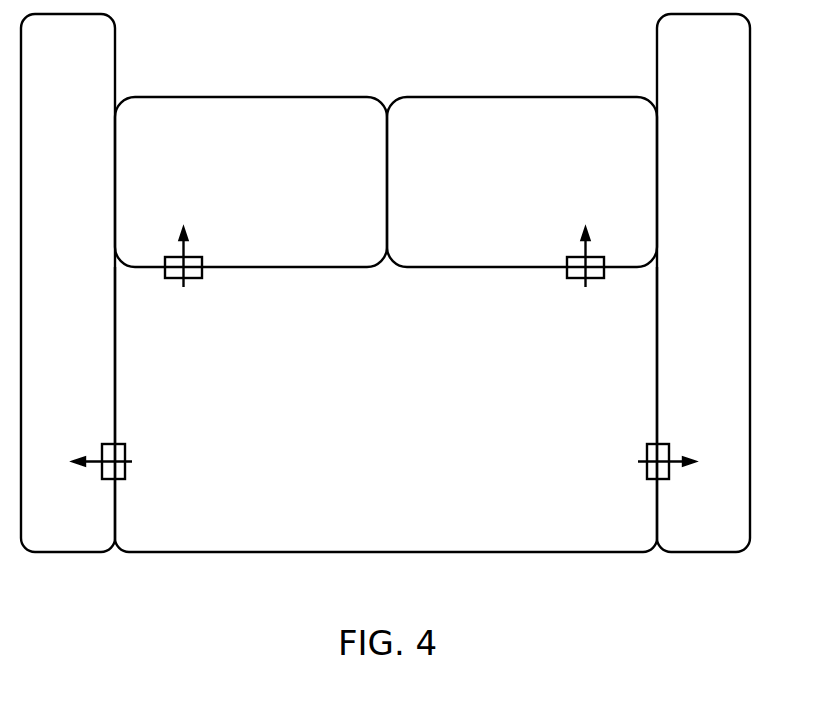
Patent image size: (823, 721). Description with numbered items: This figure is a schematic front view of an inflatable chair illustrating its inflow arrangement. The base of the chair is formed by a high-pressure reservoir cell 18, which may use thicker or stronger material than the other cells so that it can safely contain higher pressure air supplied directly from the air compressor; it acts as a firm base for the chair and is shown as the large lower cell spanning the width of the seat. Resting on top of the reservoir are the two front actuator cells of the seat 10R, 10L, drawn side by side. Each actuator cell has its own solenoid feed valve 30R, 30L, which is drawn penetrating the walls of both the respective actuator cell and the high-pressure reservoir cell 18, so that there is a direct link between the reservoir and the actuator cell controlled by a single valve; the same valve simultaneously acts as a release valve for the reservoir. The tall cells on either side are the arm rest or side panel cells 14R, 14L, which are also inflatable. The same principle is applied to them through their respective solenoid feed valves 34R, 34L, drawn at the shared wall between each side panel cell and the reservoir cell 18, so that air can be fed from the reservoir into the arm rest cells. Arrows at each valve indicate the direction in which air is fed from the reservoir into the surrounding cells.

The arm rest or side panel cell 14R is at (68, 283).
The arm rest or side panel cell 14L is at (703, 283).
The front actuator cell of the seat 10R is at (275, 161).
The front actuator cell of the seat 10L is at (545, 161).
The high-pressure reservoir cell 18 is at (402, 428).
The solenoid feed valve 30R is at (193, 247).
The solenoid feed valve 30L is at (575, 247).
The solenoid feed valve 34R is at (100, 450).
The solenoid feed valve 34L is at (677, 447).